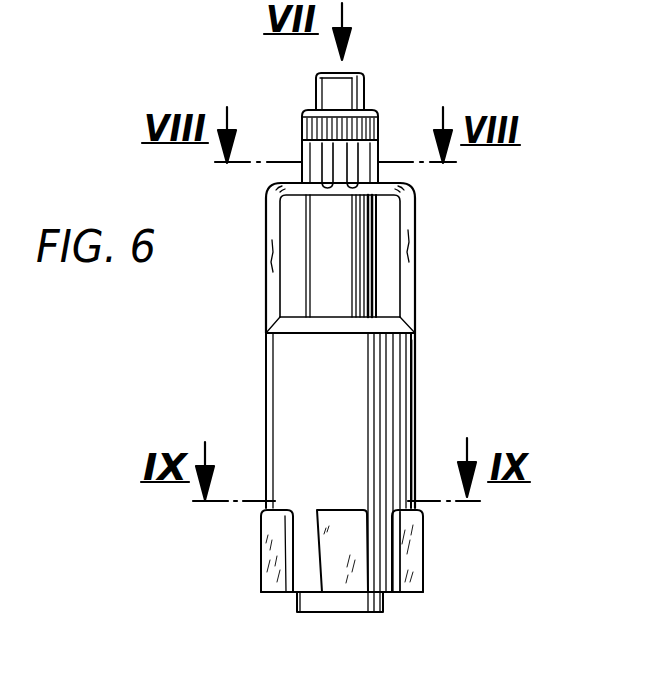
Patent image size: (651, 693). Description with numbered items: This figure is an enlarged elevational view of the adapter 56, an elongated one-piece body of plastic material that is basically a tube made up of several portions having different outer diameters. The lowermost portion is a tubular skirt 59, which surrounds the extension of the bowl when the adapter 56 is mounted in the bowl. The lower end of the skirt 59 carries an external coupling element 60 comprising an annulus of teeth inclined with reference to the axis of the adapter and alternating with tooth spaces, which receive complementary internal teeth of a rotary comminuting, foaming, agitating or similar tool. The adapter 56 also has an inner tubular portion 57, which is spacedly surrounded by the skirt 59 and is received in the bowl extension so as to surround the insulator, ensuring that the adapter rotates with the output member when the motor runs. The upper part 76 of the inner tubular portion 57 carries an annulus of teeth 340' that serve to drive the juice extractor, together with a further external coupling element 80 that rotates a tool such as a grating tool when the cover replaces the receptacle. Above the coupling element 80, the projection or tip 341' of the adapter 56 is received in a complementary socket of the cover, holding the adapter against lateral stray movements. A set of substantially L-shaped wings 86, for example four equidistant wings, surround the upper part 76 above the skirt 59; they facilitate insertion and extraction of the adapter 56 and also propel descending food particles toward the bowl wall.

The projection or tip 341' is at (385, 81).
The annulus of teeth 340' is at (378, 110).
The external coupling element 80 is at (380, 172).
The L-shaped wings 86 is at (417, 252).
The upper part of the inner tubular portion 76 is at (380, 290).
The adapter 56 is at (418, 374).
The tubular skirt 59 is at (420, 402).
The external coupling element 60 is at (352, 567).
The inner tubular portion 57 is at (360, 604).